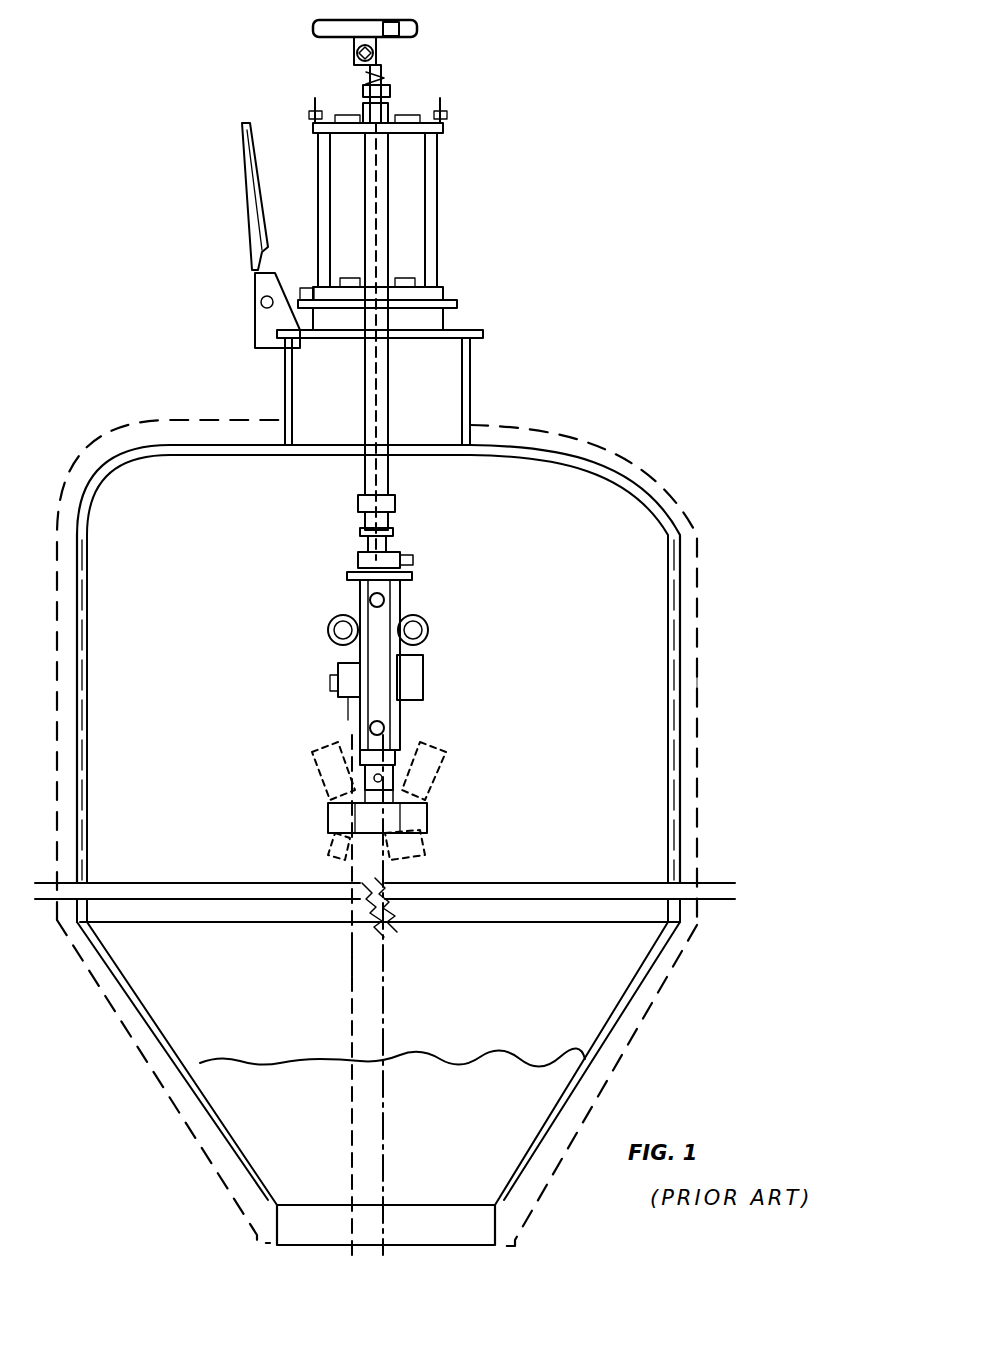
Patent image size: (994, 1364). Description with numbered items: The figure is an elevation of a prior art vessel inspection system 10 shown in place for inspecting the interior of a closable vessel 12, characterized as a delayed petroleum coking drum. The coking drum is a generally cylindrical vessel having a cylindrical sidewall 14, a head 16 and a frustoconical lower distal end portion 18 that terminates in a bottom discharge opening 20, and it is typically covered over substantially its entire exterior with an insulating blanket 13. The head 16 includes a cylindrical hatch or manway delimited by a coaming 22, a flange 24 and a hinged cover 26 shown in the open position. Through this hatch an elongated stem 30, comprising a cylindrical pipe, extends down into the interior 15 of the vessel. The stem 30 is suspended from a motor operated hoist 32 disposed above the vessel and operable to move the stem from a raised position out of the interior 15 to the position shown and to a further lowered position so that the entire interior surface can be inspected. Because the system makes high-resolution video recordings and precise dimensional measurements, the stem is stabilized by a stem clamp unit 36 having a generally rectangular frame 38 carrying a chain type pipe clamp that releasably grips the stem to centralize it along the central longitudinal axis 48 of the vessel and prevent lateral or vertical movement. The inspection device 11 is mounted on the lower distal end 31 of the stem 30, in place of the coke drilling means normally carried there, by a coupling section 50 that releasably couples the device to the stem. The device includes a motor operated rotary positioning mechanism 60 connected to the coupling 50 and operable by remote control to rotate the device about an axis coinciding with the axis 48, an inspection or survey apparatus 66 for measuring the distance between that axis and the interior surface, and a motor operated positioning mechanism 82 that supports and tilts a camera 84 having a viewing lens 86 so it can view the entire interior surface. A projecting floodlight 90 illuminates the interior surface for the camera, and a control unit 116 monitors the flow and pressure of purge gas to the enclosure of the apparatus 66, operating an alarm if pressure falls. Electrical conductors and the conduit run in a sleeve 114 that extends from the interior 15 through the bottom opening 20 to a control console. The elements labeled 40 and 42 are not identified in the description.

The vessel inspection system 10 is at (506, 566).
The inspection device 11 is at (410, 596).
The closable vessel 12 is at (680, 502).
The insulating blanket 13 is at (697, 678).
The cylindrical sidewall 14 is at (680, 620).
The interior 15 is at (562, 680).
The head 16 is at (510, 444).
The frustoconical lower distal end portion 18 is at (612, 1035).
The bottom discharge opening 20 is at (505, 1244).
The coaming 22 is at (470, 364).
The flange 24 is at (452, 321).
The hinged cover 26 is at (242, 182).
The elongated stem 30 is at (402, 83).
The lower distal end 31 is at (394, 523).
The motor operated hoist 32 is at (354, 52).
The stem clamp unit 36 is at (451, 194).
The rectangular frame 38 is at (440, 143).
The tie rod 40 is at (315, 131).
The pivot bracket 42 is at (310, 288).
The central longitudinal axis 48 is at (365, 400).
The coupling section 50 is at (361, 531).
The rotary positioning mechanism 60 is at (357, 565).
The inspection or survey apparatus 66 is at (372, 688).
The motor operated positioning mechanism 82 is at (410, 754).
The camera 84 is at (304, 768).
The viewing lens 86 is at (314, 751).
The floodlight 90 is at (328, 622).
The sleeve 114 is at (352, 949).
The control unit 116 is at (422, 684).